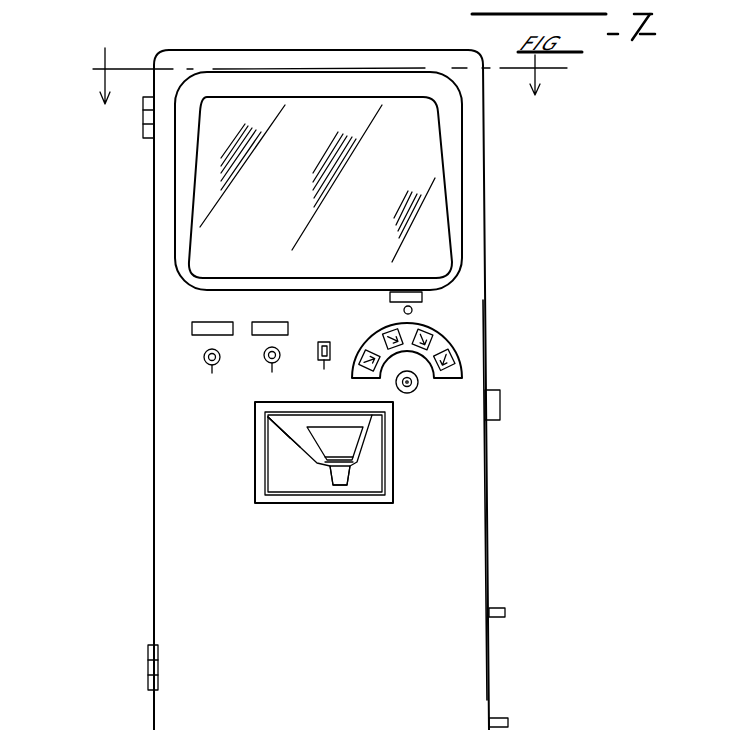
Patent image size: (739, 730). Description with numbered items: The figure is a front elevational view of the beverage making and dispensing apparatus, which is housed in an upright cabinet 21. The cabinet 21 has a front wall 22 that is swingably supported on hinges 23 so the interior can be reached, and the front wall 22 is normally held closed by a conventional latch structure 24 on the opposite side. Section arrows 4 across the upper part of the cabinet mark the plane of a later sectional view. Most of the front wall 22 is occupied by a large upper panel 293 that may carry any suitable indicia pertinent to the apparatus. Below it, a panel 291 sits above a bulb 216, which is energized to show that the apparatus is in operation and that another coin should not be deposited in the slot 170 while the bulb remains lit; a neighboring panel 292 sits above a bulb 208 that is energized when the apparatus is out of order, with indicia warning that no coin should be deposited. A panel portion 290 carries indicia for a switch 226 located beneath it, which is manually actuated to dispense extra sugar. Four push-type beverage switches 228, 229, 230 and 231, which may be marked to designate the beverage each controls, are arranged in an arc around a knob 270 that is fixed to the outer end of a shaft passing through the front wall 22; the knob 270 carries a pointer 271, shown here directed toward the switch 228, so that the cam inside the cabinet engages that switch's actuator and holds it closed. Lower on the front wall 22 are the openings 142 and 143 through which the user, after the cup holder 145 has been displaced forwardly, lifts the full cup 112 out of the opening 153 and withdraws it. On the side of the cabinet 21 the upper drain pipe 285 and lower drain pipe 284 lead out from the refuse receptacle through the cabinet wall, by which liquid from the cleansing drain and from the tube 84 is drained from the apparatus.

The section line 4- 4 is at (325, 76).
The upright cabinet 21 is at (496, 254).
The front wall 22 is at (472, 487).
The hinges 23 is at (146, 131).
The latch structure 24 is at (500, 399).
The tube 84 is at (103, 725).
The cup 112 is at (341, 482).
The opening 142 is at (267, 450).
The opening 143 is at (290, 492).
The cup holder 145 is at (284, 428).
The opening 153 is at (357, 448).
The coin slot 170 is at (326, 369).
The bulb 208 is at (273, 371).
The bulb 216 is at (204, 372).
The switch 226 is at (413, 309).
The switch 228 is at (449, 357).
The switch 229 is at (425, 343).
The switch 230 is at (392, 334).
The switch 231 is at (370, 353).
The knob 270 is at (412, 391).
The pointer 271 is at (429, 369).
The lower drain pipe 284 is at (509, 718).
The upper drain pipe 285 is at (506, 612).
The panel portion 290 is at (424, 296).
The panel 291 is at (207, 322).
The panel 292 is at (298, 311).
The large upper panel 293 is at (423, 153).